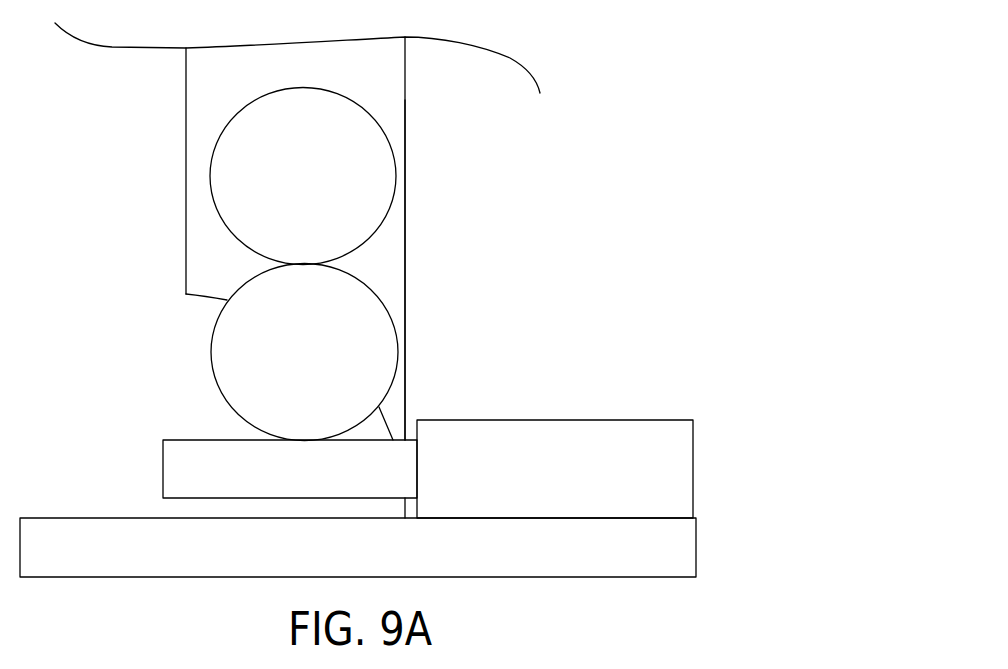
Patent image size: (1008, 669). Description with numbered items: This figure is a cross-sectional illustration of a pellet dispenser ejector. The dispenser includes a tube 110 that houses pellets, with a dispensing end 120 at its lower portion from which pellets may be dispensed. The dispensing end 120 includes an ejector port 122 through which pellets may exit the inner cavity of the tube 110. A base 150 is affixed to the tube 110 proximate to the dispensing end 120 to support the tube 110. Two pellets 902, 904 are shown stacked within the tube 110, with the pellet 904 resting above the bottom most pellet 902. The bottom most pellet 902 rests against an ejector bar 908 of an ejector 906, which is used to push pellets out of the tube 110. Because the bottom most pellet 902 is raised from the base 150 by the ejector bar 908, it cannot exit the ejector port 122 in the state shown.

The tube 110 is at (414, 79).
The dispensing end 120 is at (410, 375).
The ejector port 122 is at (183, 309).
The base 150 is at (380, 563).
The bottom most pellet 902 is at (282, 367).
The pellet 904 is at (282, 188).
The ejector 906 is at (635, 420).
The ejector bar 908 is at (178, 440).